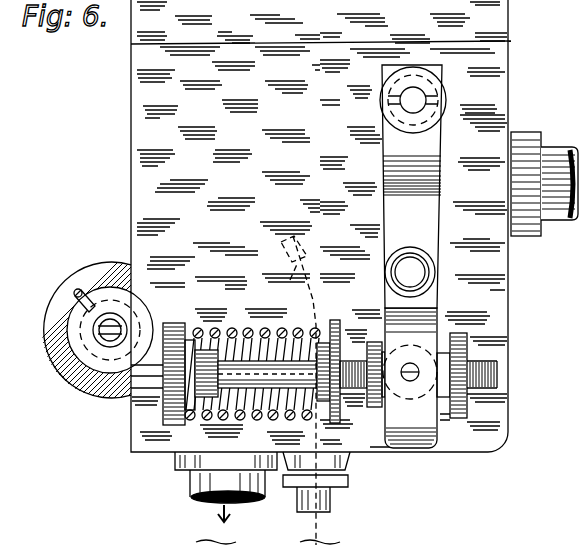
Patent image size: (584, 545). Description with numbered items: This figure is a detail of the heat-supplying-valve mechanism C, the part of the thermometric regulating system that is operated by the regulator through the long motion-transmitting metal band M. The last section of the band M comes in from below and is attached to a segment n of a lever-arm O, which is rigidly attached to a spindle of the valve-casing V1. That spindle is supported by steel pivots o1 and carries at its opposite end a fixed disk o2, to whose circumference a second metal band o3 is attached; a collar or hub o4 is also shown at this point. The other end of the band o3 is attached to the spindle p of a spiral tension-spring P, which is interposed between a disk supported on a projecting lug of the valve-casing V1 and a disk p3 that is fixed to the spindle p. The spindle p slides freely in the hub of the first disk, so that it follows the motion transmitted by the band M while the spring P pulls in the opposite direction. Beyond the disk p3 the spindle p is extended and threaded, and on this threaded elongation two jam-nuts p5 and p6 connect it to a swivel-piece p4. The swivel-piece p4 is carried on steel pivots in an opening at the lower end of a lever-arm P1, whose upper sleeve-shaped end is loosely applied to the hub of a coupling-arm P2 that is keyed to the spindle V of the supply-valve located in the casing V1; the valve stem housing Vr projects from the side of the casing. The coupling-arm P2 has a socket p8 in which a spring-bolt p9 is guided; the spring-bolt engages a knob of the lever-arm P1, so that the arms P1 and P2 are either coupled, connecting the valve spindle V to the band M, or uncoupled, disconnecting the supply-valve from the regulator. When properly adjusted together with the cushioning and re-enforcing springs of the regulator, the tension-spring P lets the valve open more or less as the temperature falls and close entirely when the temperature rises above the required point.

The heat-supplying-valve mechanism C is at (301, 226).
The lever-arm O is at (145, 332).
The steel pivots o1 is at (110, 333).
The fixed disk o2 is at (116, 297).
The metal band o3 is at (67, 373).
The collar o4 is at (163, 377).
The spiral tension-spring P is at (294, 424).
The disk p3 is at (256, 373).
The swivel-piece p4 is at (335, 320).
The jam-nut p5 is at (366, 407).
The lever-arm P1 is at (412, 443).
The spindle p is at (497, 374).
The jam-nut p6 is at (458, 418).
The coupling-arm P2 is at (429, 186).
The spindle of the supply-valve V is at (415, 100).
The valve-casing V1 is at (305, 115).
The valve stem housing Vr is at (547, 164).
The socket p8 is at (433, 265).
The spring-bolt p9 is at (412, 278).
The segment n is at (298, 390).
The metal band M is at (263, 498).